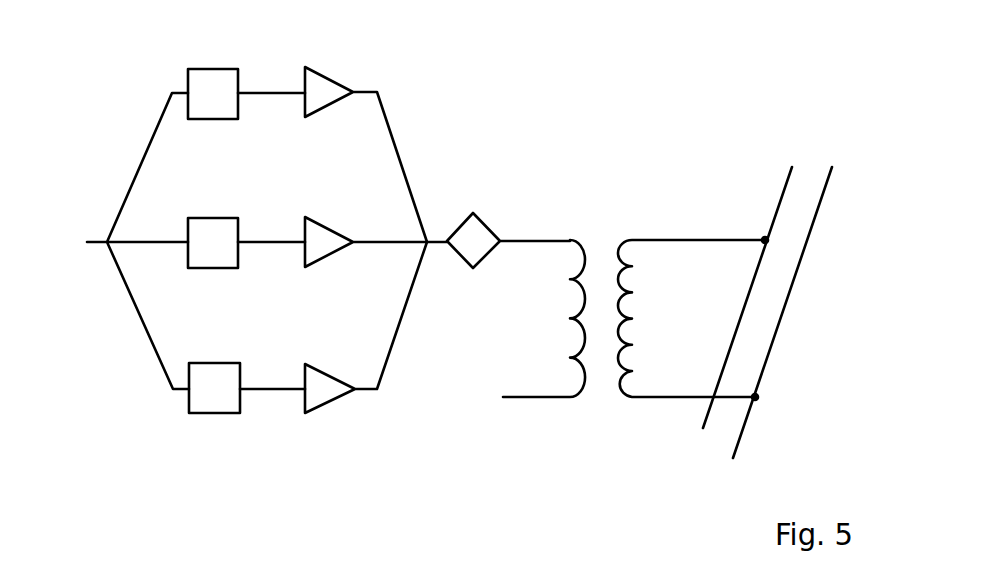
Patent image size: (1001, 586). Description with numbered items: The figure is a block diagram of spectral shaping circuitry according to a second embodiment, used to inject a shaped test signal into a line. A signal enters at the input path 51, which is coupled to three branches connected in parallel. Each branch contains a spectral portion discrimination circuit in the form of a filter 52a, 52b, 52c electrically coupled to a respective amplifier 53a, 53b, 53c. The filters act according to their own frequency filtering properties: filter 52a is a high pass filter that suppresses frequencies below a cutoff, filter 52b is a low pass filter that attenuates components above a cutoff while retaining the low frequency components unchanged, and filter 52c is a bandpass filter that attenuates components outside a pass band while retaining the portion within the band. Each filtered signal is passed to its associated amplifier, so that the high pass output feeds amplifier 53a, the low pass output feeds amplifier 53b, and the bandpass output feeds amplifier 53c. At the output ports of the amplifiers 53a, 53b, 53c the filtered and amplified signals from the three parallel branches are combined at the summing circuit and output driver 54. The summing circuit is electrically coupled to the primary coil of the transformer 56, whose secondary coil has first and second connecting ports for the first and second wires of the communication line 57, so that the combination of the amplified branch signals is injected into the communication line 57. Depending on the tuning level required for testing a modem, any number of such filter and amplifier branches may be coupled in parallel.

The input path 51 is at (112, 241).
The filter 52a is at (188, 72).
The filter 52b is at (221, 218).
The filter 52c is at (189, 413).
The amplifier 53a is at (327, 73).
The amplifier 53b is at (327, 223).
The amplifier 53c is at (330, 400).
The summing circuit and output driver 54 is at (487, 226).
The transformer 56 is at (545, 403).
The communication line 57 is at (778, 165).